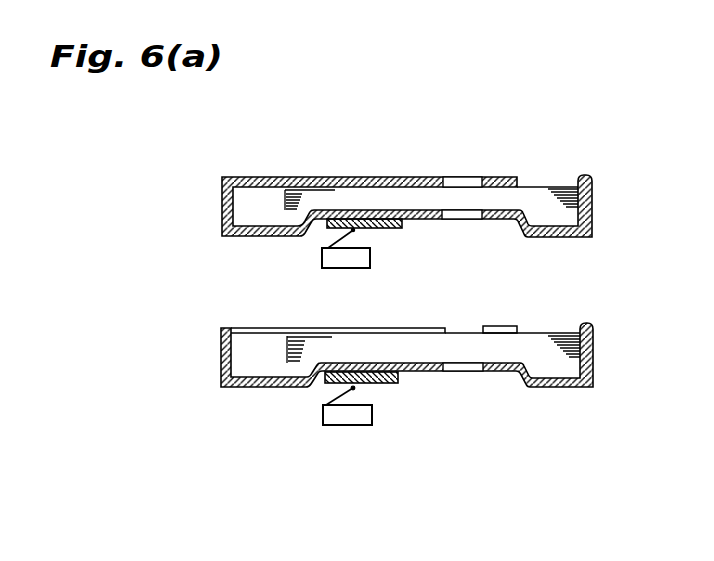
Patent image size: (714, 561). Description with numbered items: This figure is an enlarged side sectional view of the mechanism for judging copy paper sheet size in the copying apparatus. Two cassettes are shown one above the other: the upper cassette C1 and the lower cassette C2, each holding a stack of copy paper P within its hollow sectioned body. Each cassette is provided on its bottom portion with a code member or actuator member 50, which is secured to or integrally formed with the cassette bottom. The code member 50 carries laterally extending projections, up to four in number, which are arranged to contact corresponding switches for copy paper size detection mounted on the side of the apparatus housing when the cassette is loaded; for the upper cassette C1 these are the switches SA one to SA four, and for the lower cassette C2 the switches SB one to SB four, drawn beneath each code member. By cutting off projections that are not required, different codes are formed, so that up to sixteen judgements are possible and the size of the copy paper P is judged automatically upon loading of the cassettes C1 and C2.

The upper cassette C1 is at (222, 207).
The lower cassette C2 is at (222, 361).
The copy paper P is at (373, 192).
The code member 50 is at (403, 228).